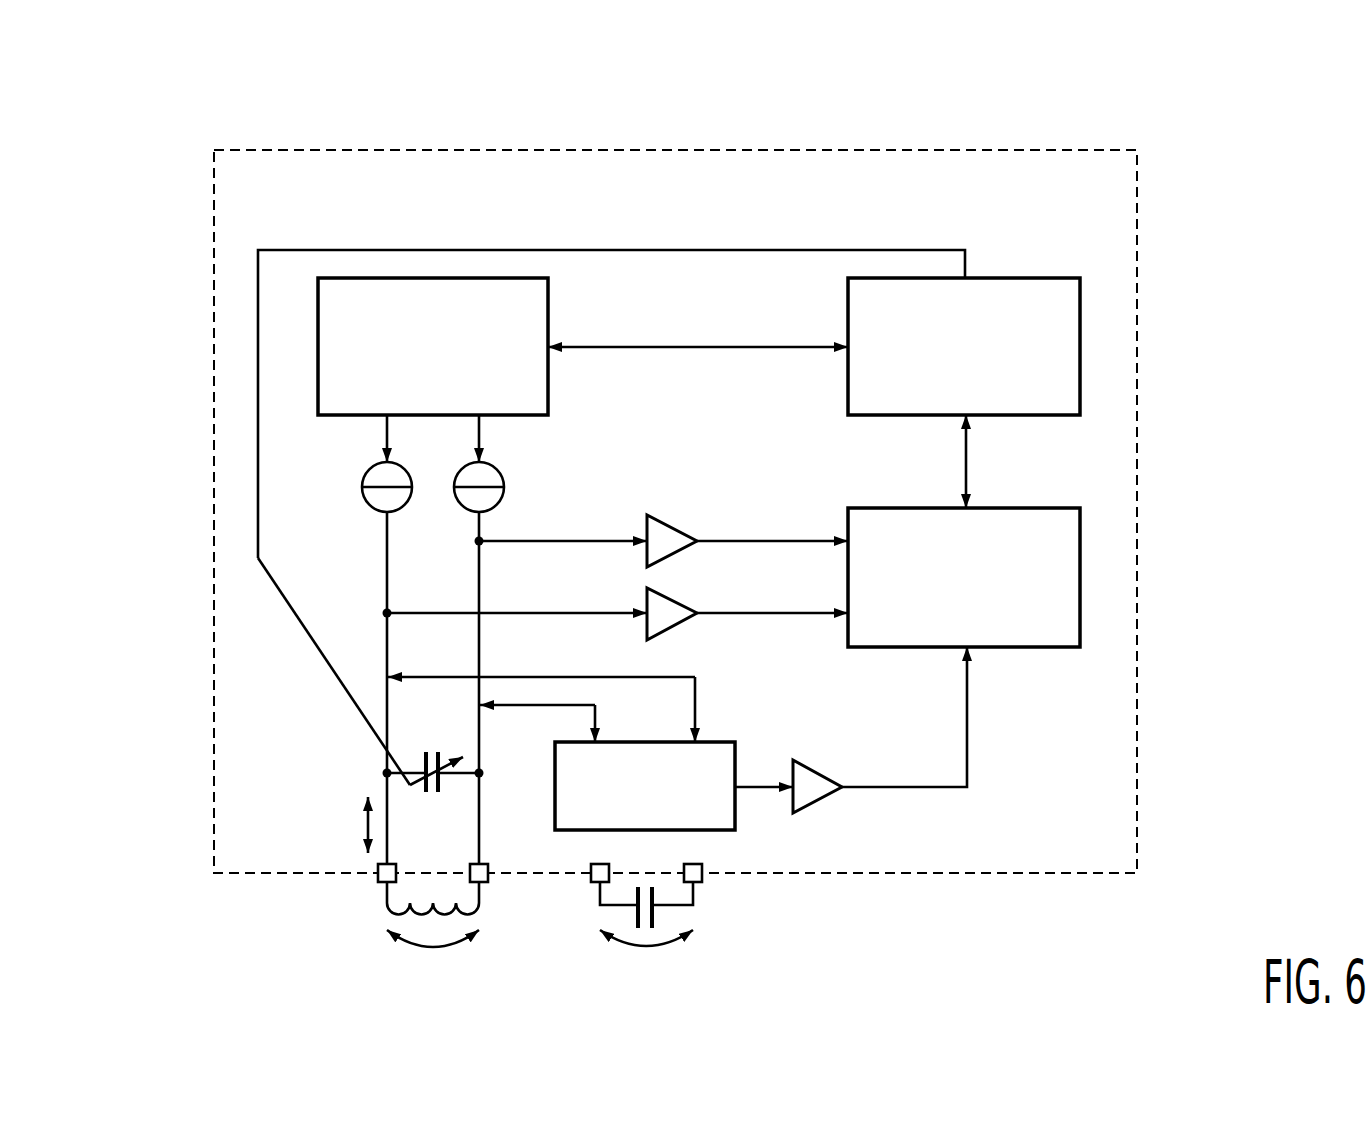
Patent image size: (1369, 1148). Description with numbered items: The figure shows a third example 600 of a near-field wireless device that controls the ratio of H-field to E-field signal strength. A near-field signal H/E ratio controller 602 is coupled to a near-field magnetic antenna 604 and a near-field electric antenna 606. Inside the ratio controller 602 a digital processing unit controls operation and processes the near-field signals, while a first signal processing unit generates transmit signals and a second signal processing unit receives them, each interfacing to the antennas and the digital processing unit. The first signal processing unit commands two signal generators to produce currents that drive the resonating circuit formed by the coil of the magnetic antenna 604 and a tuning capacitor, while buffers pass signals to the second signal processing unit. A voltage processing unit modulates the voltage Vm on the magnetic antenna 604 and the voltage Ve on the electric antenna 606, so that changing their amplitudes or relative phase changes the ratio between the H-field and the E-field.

The third example of the near-field wireless device 600 is at (118, 197).
The ratio controller 602 is at (643, 227).
The near-field magnetic antenna (MA) 604 is at (257, 975).
The near-field electric antenna (EA) 606 is at (779, 975).